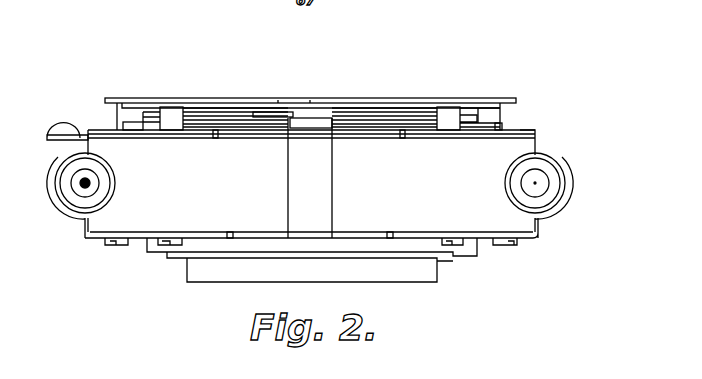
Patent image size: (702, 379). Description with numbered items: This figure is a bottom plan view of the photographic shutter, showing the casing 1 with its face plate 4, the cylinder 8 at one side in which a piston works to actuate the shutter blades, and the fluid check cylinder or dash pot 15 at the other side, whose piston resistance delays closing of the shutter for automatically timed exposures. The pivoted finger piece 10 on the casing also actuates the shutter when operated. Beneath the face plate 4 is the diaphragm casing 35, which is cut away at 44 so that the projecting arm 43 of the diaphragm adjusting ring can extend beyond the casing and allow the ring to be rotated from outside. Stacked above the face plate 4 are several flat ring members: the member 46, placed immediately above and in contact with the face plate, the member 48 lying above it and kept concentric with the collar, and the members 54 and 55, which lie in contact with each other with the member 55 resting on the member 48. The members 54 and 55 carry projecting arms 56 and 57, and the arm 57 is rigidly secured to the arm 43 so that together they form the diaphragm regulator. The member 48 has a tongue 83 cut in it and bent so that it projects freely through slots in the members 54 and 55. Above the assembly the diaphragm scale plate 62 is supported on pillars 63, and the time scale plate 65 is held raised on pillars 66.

The casing 1 is at (311, 184).
The face plate 4 is at (538, 137).
The cylinder 8 is at (60, 187).
The finger piece 10 is at (58, 128).
The fluid check cylinder or dash pot 15 is at (560, 193).
The diaphragm casing 35 is at (158, 250).
The projecting arm 43 is at (320, 190).
The cut away 44 is at (372, 235).
The member 46 is at (534, 132).
The member 48 is at (133, 124).
The member 54 is at (466, 120).
The member 55 is at (225, 122).
The projecting arm 56 is at (255, 113).
The projecting arm 57 is at (317, 118).
The diaphragm scale plate 62 is at (417, 107).
The pillars 63 is at (174, 117).
The time scale plate 65 is at (372, 100).
The pillars 66 is at (496, 115).
The tongue 83 is at (290, 100).